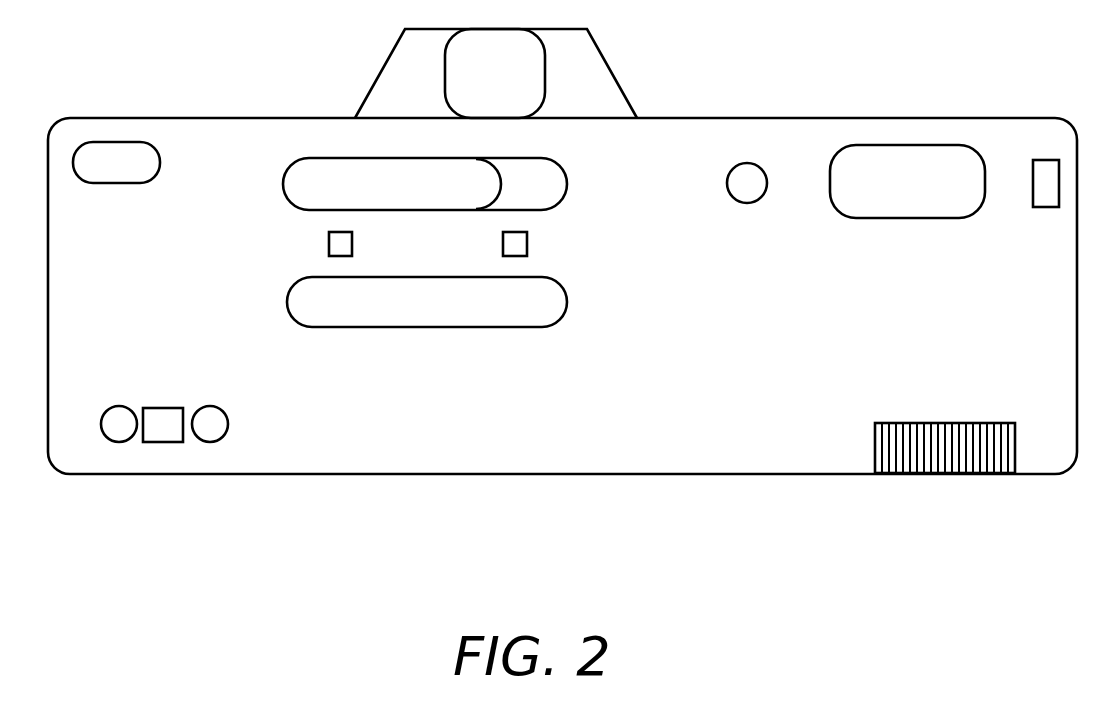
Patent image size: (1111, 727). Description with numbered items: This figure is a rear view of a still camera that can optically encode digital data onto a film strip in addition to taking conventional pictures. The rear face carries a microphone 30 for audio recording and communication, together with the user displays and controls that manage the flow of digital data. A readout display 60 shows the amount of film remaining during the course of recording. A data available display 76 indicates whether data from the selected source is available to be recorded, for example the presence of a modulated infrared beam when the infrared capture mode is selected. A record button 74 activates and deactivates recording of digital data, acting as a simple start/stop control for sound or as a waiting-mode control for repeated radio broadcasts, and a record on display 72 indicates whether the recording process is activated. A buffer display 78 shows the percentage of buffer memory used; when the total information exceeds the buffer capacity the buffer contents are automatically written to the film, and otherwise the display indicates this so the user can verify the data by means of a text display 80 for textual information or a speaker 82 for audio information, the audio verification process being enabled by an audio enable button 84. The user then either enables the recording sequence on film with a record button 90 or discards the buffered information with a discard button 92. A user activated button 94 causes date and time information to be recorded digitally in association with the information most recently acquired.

The microphone 30 is at (887, 423).
The readout display 60 is at (160, 158).
The record on display 72 is at (228, 413).
The record button 74 is at (163, 408).
The data available display 76 is at (120, 406).
The buffer display 78 is at (567, 176).
The text display 80 is at (567, 297).
The speaker 82 is at (928, 218).
The audio enable button 84 is at (767, 185).
The record button 90 is at (386, 222).
The discard button 92 is at (508, 232).
The user activated button 94 is at (1047, 207).